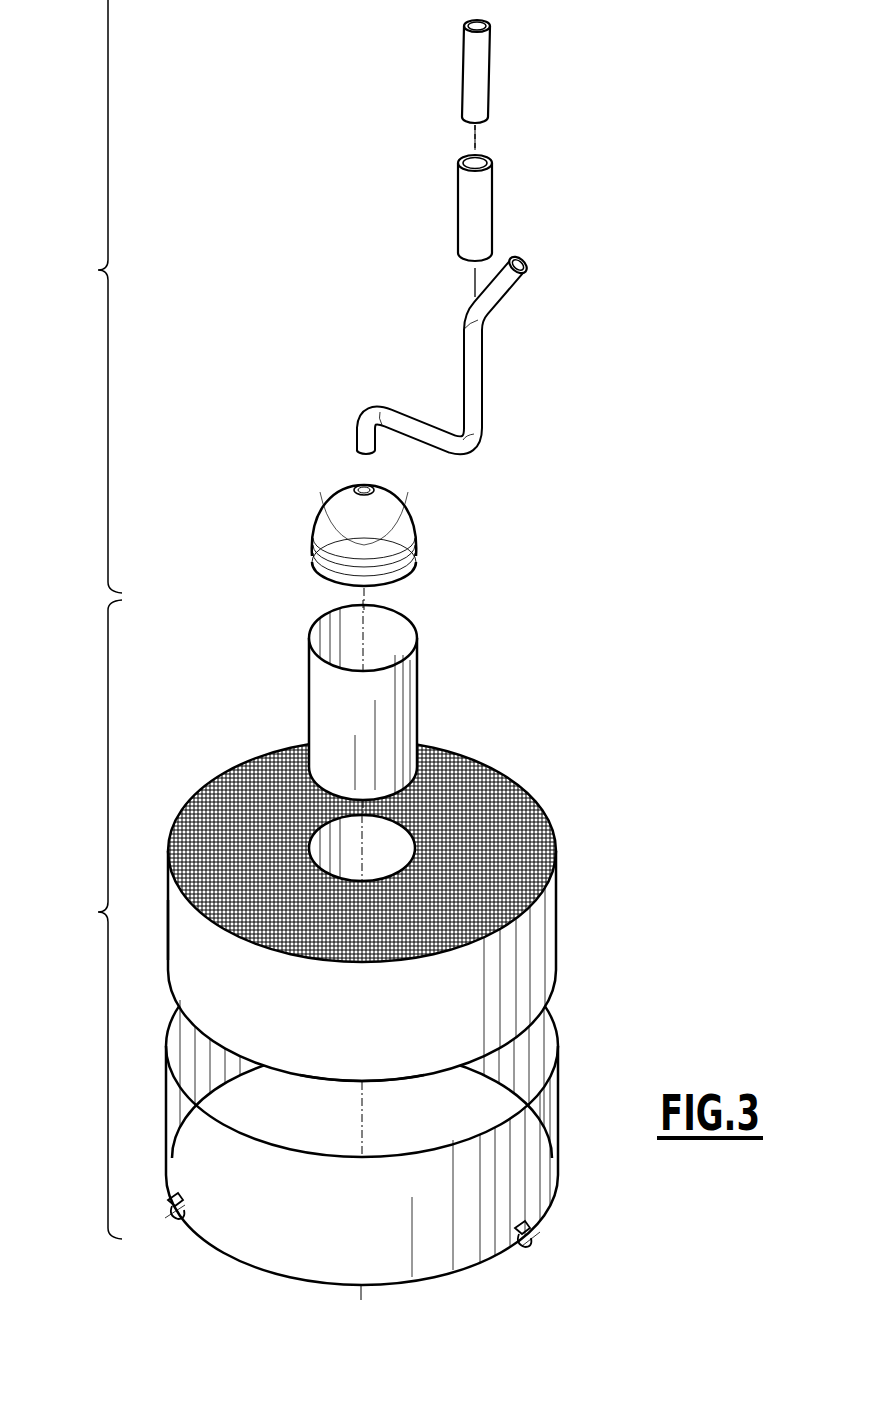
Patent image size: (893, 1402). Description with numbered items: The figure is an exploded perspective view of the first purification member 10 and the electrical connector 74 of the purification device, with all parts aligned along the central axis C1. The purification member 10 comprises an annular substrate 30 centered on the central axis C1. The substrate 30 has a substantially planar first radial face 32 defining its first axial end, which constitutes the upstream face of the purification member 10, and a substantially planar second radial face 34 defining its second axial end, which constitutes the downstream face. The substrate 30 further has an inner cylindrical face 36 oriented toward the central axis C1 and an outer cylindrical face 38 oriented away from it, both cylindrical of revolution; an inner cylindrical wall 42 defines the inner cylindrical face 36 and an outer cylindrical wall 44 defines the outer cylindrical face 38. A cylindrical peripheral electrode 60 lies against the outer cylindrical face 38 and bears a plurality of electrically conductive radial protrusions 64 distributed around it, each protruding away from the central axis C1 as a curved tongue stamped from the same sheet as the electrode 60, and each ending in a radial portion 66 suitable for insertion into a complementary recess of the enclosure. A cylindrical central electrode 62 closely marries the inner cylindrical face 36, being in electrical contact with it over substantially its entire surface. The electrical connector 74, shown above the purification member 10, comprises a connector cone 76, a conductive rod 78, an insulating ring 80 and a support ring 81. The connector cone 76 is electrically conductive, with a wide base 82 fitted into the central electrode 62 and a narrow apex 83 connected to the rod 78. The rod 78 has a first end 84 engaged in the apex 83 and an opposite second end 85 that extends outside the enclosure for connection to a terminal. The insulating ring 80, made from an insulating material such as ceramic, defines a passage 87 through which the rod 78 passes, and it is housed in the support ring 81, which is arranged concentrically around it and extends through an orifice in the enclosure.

The first purification member 10 is at (86, 919).
The electrical connector 74 is at (86, 296).
The annular substrate 30 is at (368, 905).
The first radial face 32 is at (490, 830).
The second radial face 34 is at (505, 1048).
The inner cylindrical face 36 is at (398, 848).
The outer cylindrical face 38 is at (493, 973).
The inner cylindrical wall 42 is at (323, 848).
The outer cylindrical wall 44 is at (192, 953).
The cylindrical peripheral electrode 60 is at (556, 1133).
The cylindrical central electrode 62 is at (398, 700).
The radial protrusions 64 is at (166, 1224).
The radial portion 66 is at (165, 1203).
The connector cone 76 is at (418, 530).
The conductive rod 78 is at (475, 366).
The insulating ring 80 is at (472, 66).
The support ring 81 is at (472, 186).
The wide base 82 is at (330, 555).
The narrow apex 83 is at (372, 486).
The first end 84 is at (360, 452).
The second end 85 is at (527, 272).
The passage 87 is at (486, 22).
The central axis C1 is at (363, 632).